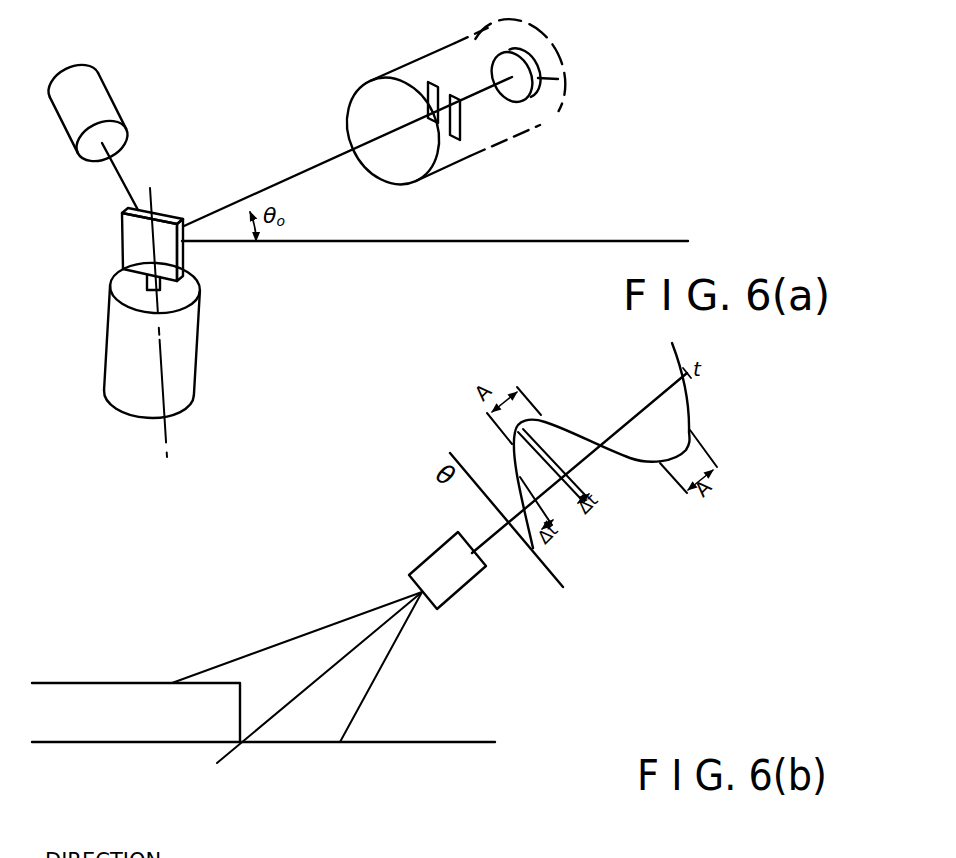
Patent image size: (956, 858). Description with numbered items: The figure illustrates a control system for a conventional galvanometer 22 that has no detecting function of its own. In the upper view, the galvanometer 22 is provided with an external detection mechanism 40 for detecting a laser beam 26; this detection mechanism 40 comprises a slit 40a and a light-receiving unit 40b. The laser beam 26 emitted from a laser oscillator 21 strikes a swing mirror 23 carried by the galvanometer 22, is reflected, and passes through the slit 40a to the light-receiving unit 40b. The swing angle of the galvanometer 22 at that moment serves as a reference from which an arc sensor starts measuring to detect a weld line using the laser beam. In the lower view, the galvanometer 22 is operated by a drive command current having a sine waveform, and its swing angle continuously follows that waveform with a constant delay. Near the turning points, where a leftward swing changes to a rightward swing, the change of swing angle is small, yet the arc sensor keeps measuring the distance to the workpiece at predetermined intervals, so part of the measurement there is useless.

In FIG. 6A, the laser oscillator 21 is at (93, 97).
In FIG. 6A, the laser beam 26 is at (122, 170).
In FIG. 6A, the swing mirror 23 is at (137, 246).
In FIG. 6B, the swing mirror 23 is at (465, 578).
In FIG. 6A, the galvanometer 22 is at (205, 362).
In FIG. 6B, the galvanometer 22 is at (476, 611).
In FIG. 6A, the detection mechanism 40 is at (500, 27).
In FIG. 6A, the slit 40a is at (428, 112).
In FIG. 6A, the light-receiving unit 40b is at (557, 80).